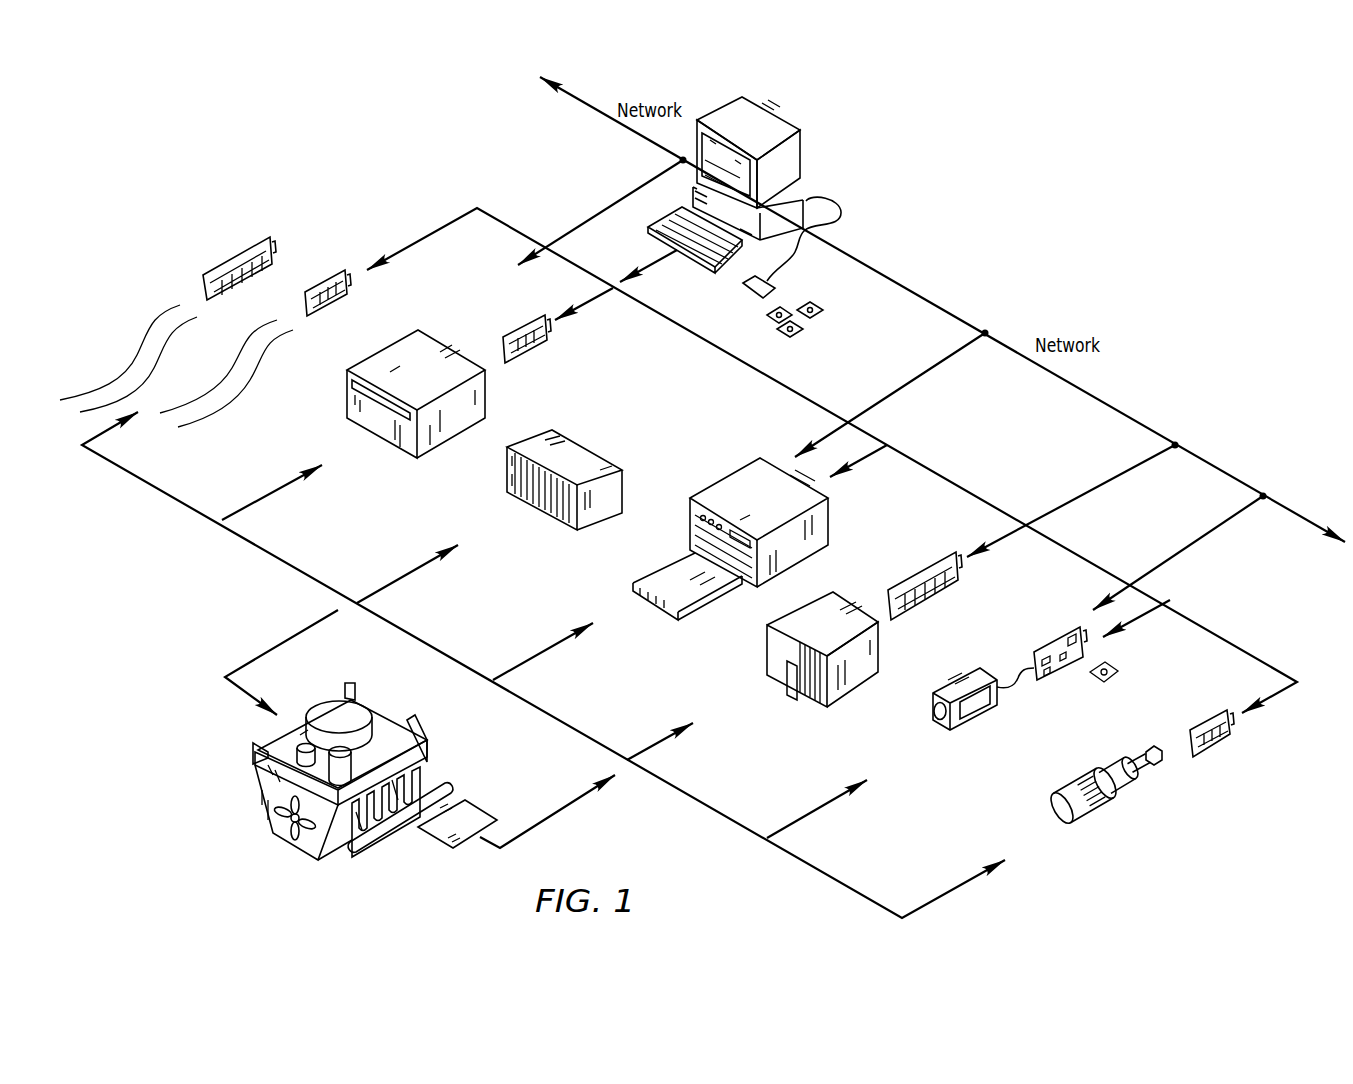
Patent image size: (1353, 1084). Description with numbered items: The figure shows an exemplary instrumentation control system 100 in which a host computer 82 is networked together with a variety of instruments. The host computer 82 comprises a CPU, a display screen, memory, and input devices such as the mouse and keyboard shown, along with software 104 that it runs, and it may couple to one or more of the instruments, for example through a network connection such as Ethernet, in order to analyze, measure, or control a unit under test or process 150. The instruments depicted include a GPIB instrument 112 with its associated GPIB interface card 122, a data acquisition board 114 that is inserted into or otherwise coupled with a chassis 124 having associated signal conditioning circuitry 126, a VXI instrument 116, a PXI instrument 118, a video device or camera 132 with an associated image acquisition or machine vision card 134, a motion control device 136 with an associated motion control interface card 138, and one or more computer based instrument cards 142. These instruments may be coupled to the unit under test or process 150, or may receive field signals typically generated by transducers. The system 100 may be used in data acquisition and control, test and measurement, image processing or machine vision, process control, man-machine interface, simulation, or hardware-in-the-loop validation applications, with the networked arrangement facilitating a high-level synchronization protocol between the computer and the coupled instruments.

The host computer 82 is at (767, 118).
The instrumentation control system 100 is at (1042, 242).
The software 104 is at (797, 328).
The GPIB instrument 112 is at (382, 362).
The data acquisition board 114 is at (945, 555).
The VXI instrument 116 is at (728, 493).
The PXI instrument 118 is at (570, 452).
The GPIB interface card 122 is at (520, 332).
The chassis 124 is at (791, 684).
The signal conditioning circuitry 126 is at (793, 680).
The video device or camera 132 is at (967, 717).
The image acquisition card 134 is at (1053, 638).
The motion control device 136 is at (1102, 807).
The motion control interface card 138 is at (1213, 745).
The computer based instrument cards 142 is at (218, 270).
The unit under test or process 150 is at (268, 785).